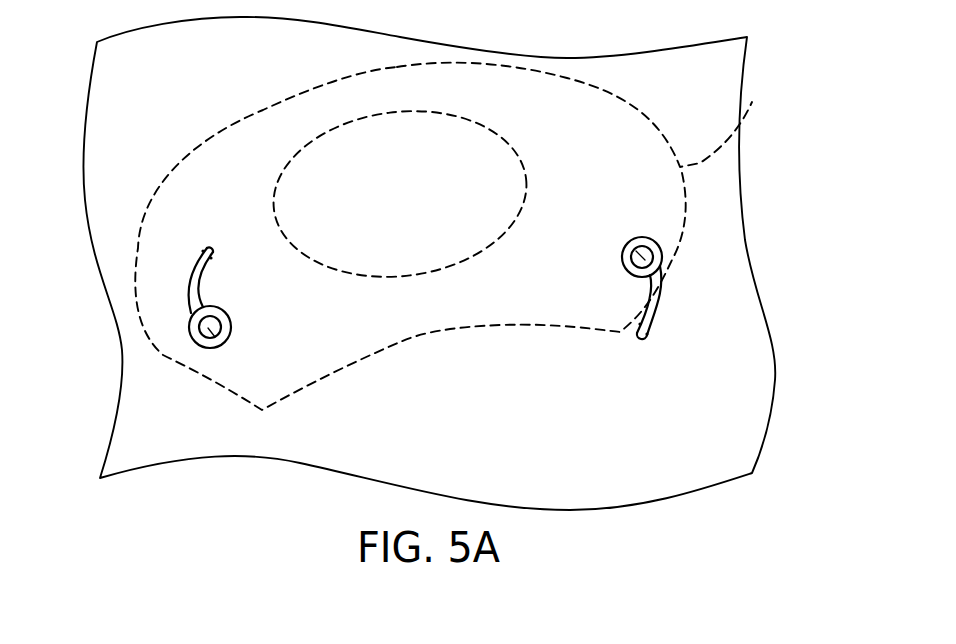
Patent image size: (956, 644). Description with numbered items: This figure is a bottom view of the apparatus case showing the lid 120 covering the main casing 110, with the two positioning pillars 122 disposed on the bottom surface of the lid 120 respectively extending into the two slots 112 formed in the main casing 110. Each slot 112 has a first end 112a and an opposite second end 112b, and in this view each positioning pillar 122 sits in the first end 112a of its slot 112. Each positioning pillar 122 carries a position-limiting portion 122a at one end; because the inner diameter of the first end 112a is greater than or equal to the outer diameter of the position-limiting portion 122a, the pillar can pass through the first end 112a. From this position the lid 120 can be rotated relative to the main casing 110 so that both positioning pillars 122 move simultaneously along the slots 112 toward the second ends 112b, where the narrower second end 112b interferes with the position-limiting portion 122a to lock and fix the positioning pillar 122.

The main casing 110 is at (720, 89).
The slot 112 is at (195, 294).
The first end 112a is at (190, 336).
The second end 112b is at (197, 250).
The lid 120 is at (752, 102).
The positioning pillar 122 is at (210, 346).
The position-limiting portion 122a is at (214, 337).